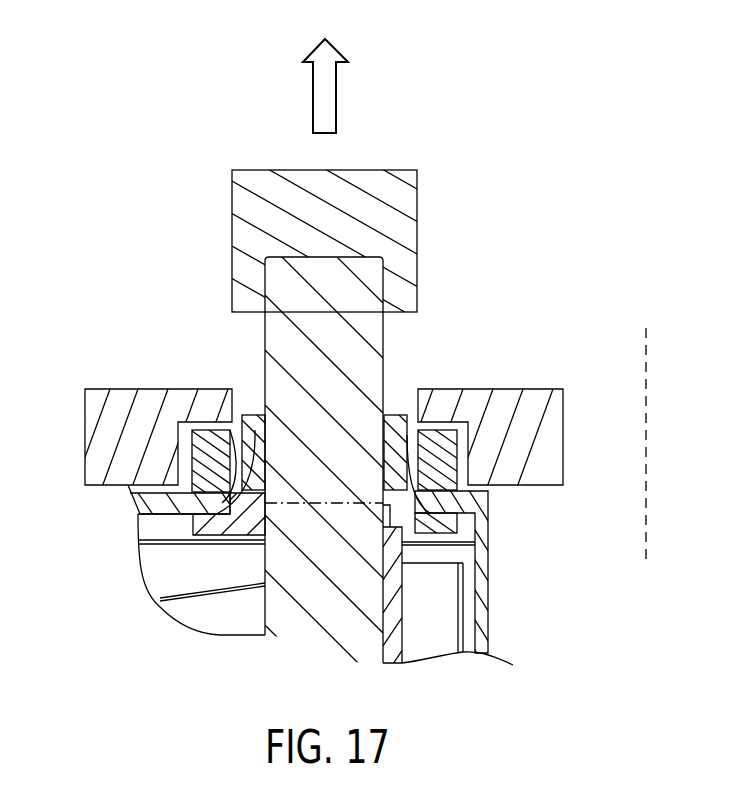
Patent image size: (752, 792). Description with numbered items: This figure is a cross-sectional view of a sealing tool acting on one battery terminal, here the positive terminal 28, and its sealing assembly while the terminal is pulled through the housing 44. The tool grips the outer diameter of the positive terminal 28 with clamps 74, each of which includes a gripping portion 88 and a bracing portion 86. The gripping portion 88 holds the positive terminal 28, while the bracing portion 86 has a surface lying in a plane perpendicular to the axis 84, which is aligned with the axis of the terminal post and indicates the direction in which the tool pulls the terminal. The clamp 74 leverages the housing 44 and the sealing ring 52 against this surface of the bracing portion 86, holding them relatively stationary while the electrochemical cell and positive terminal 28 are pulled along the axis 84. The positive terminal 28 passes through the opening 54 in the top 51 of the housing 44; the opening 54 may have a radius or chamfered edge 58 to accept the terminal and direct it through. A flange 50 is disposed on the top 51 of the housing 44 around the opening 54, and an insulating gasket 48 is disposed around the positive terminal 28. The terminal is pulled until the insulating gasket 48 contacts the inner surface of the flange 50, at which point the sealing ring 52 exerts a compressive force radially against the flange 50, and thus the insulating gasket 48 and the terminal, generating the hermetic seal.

The clamps 74 is at (163, 110).
The gripping portion 88 is at (232, 197).
The positive terminal 28 is at (293, 302).
The bracing portion 86 is at (563, 418).
The insulating gasket 48 is at (257, 433).
The flange 50 is at (412, 442).
The chamfered edge 58 is at (247, 473).
The sealing ring 52 is at (445, 442).
The top 51 is at (142, 502).
The opening 54 is at (293, 507).
The housing 44 is at (484, 571).
The axis 84 is at (648, 445).